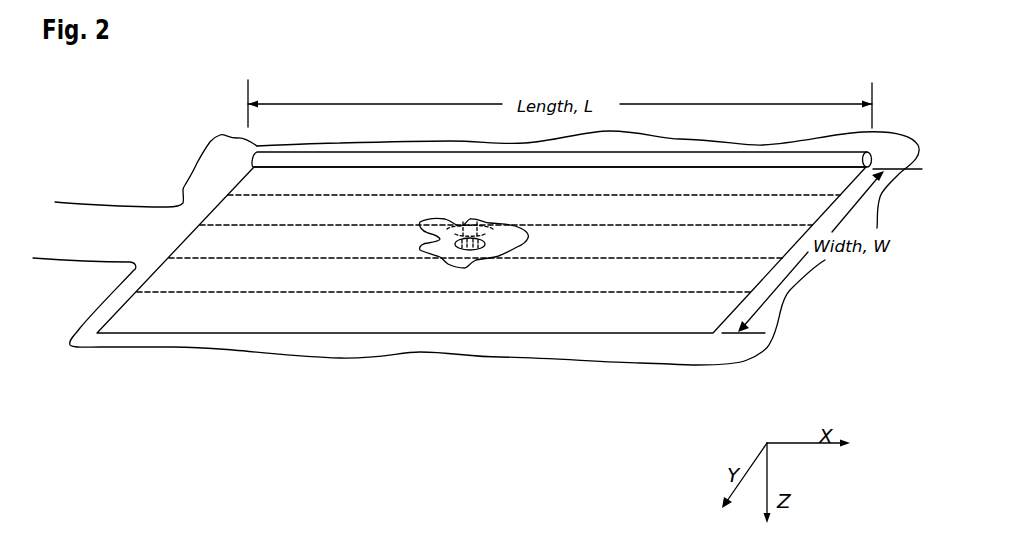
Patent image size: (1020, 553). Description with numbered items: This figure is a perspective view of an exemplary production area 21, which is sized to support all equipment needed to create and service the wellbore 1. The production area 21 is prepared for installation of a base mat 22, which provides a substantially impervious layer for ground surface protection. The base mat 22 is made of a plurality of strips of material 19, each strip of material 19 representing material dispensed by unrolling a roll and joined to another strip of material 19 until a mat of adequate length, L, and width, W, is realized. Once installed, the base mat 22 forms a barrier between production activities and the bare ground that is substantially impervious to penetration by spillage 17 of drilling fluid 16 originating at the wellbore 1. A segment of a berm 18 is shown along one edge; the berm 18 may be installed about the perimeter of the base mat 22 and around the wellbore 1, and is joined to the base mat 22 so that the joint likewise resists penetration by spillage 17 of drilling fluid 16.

The wellbore 1 is at (457, 248).
The drilling fluid 16 is at (477, 249).
The spillage 17 is at (515, 245).
The berm 18 is at (268, 162).
The strip of material 19 is at (200, 243).
The production area 21 is at (173, 346).
The base mat 22 is at (444, 321).